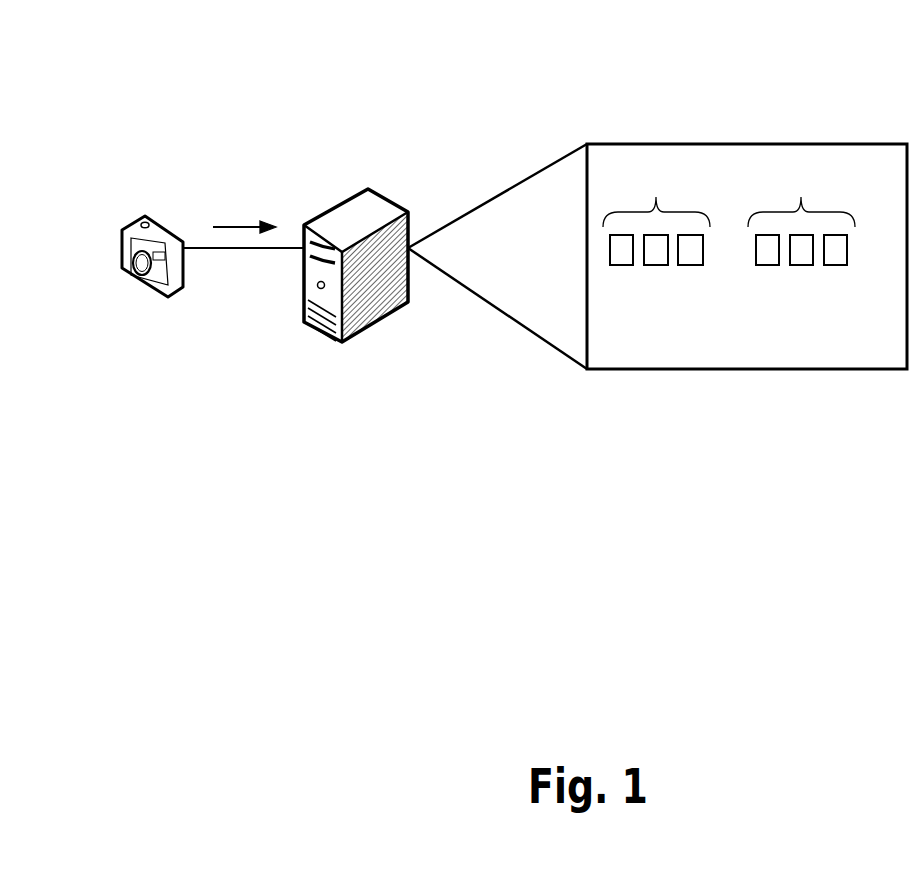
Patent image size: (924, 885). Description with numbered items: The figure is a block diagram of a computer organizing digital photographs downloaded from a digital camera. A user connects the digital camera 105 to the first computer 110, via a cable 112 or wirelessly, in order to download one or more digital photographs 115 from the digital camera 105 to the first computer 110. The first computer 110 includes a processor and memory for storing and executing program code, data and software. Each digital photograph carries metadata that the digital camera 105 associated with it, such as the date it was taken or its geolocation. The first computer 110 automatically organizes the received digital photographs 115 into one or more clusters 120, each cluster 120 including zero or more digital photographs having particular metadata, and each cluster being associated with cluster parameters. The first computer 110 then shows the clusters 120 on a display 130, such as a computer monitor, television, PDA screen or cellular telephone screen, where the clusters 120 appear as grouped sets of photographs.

The digital camera 105 is at (106, 292).
The first computer 110 is at (356, 284).
The cable 112 is at (260, 252).
The digital photographs 115 is at (236, 223).
The clusters 120 is at (802, 173).
The display 130 is at (710, 360).